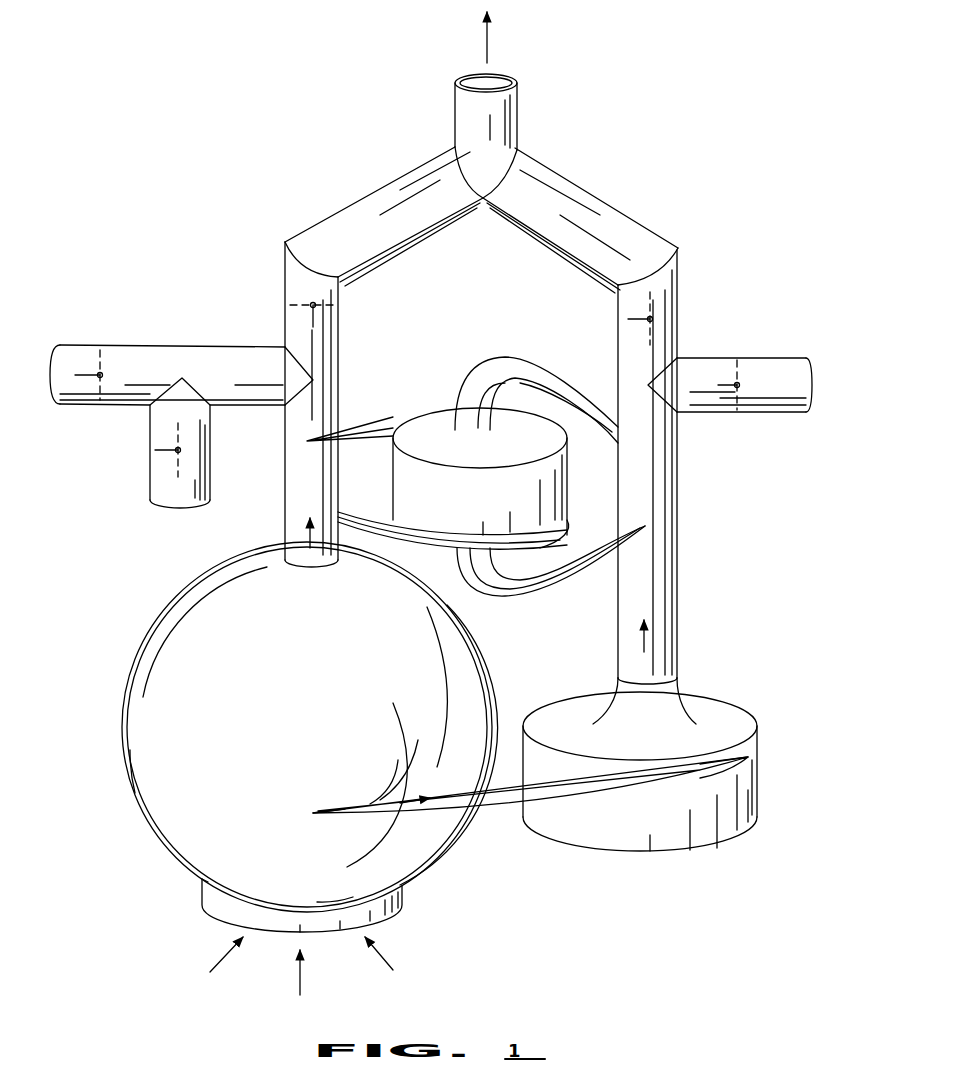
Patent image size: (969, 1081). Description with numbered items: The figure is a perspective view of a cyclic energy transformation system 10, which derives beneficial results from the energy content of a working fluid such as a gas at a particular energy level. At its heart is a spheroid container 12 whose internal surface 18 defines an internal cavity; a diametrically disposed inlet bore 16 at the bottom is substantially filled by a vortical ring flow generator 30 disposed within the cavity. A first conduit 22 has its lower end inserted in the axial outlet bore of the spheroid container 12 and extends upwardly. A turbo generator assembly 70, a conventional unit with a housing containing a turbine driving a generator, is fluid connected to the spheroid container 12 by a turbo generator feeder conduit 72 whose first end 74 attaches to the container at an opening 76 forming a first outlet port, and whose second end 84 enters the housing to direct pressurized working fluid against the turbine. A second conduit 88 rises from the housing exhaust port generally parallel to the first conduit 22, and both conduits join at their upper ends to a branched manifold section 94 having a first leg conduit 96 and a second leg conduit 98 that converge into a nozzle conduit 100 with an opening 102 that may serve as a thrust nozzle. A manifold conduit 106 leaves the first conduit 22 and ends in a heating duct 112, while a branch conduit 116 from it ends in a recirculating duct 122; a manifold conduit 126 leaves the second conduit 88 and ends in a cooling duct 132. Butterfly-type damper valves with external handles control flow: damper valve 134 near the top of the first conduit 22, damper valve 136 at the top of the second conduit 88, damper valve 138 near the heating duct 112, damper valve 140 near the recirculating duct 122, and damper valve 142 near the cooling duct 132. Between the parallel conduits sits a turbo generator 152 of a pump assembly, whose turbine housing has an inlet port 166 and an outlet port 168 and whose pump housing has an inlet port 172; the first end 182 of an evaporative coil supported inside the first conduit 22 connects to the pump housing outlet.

The cyclic energy transformation system 10 is at (160, 612).
The spheroid container 12 is at (150, 720).
The inlet bore 16 is at (220, 918).
The internal surface 18 is at (283, 490).
The first conduit 22 is at (283, 322).
The vortical ring flow generator 30 is at (197, 893).
The turbo generator assembly 70 is at (762, 772).
The turbo generator feeder conduit 72 is at (495, 795).
The first end 74 is at (380, 800).
The opening 76 is at (342, 805).
The second end 84 is at (718, 770).
The second conduit 88 is at (663, 572).
The branched manifold section 94 is at (560, 165).
The first leg conduit 96 is at (405, 175).
The second leg conduit 98 is at (605, 205).
The nozzle conduit 100 is at (505, 115).
The opening 102 is at (497, 78).
The manifold conduit 106 is at (207, 345).
The heating duct 112 is at (40, 389).
The branch conduit 116 is at (150, 427).
The recirculating duct 122 is at (172, 508).
The manifold conduit 126 is at (757, 358).
The cooling duct 132 is at (815, 385).
The damper valve 134 is at (310, 300).
The damper valve 136 is at (655, 312).
The damper valve 138 is at (103, 370).
The damper valve 140 is at (182, 446).
The damper valve 142 is at (740, 365).
The turbo generator 152 is at (570, 480).
The inlet port 166 is at (362, 428).
The outlet port 168 is at (495, 370).
The inlet port 172 is at (485, 578).
The first end 182 is at (368, 525).